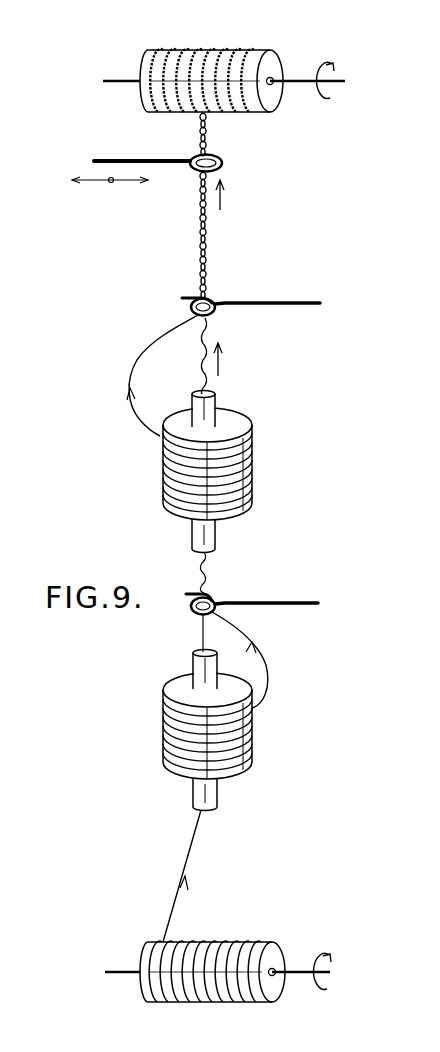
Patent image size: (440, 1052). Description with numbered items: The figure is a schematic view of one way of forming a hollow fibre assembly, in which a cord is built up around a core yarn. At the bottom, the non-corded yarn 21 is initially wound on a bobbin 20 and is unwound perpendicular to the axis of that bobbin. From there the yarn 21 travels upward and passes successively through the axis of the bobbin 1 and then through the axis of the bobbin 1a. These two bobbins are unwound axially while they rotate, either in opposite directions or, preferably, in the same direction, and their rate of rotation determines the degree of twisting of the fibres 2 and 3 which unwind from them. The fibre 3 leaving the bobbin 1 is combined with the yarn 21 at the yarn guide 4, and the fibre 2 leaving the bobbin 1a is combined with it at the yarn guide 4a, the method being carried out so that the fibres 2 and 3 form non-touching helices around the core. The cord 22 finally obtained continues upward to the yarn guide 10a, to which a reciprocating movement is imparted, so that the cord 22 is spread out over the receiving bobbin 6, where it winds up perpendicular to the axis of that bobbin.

The receiving bobbin 6 is at (268, 49).
The yarn guide 10a is at (126, 157).
The cord 22 is at (208, 234).
The yarn guide 4a is at (277, 312).
The fibre 2 is at (135, 356).
The bobbin 1a is at (158, 475).
The yarn guide 4 is at (278, 603).
The fibre 3 is at (268, 674).
The bobbin 1 is at (158, 727).
The non-corded yarn 21 is at (172, 899).
The bobbin 20 is at (282, 934).